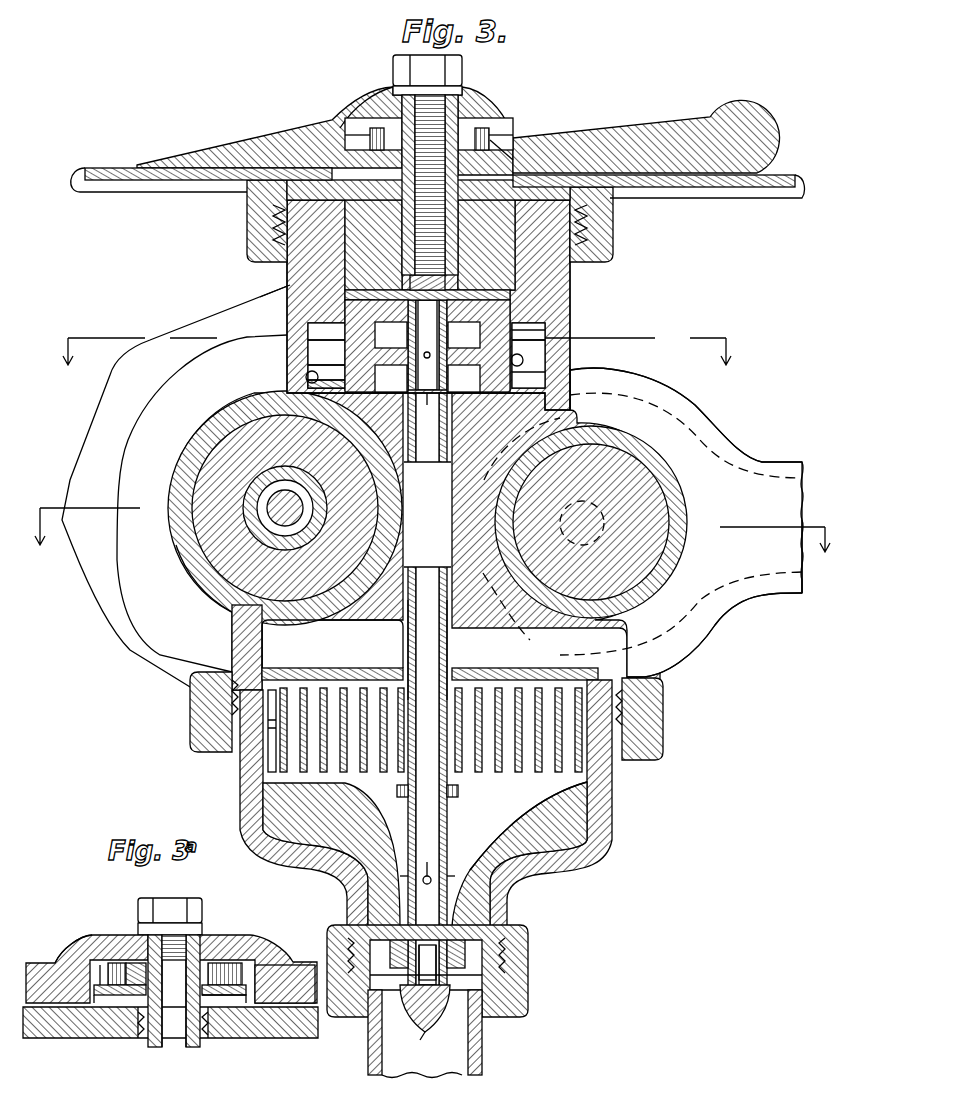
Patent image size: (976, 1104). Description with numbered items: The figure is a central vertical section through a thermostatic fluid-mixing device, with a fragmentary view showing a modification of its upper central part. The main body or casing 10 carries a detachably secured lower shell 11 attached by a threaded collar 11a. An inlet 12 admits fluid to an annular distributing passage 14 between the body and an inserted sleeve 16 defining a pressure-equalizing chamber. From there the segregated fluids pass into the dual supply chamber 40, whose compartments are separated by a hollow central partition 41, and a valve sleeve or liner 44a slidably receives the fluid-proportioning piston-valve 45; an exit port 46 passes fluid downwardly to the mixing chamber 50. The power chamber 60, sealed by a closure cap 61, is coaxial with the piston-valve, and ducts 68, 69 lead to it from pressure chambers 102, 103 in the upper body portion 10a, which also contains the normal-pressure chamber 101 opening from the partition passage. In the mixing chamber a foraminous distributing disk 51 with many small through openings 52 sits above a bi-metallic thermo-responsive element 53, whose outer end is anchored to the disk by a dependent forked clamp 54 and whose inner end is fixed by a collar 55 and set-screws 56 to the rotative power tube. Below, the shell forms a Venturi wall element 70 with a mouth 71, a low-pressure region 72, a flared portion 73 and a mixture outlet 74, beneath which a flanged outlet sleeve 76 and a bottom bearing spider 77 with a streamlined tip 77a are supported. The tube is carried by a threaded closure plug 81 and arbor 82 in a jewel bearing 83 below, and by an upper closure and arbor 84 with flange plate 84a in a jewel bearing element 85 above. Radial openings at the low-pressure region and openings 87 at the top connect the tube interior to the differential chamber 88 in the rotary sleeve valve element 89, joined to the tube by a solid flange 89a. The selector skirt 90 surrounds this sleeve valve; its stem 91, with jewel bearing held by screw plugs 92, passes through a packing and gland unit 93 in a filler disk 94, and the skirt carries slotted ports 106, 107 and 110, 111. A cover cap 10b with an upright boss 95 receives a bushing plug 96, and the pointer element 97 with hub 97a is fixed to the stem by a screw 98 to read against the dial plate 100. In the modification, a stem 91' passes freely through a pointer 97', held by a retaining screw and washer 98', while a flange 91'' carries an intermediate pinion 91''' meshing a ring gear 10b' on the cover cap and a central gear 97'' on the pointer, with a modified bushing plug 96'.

In FIG. 3, the main body or casing 10 is at (195, 310).
In FIG. 3, the upper cylindrical body portion 10a is at (572, 288).
In FIG. 3, the cover cap 10b is at (448, 221).
In FIG. 3A, the cover cap 10b is at (170, 1035).
In FIG. 3, the lower shell 11 is at (612, 792).
In FIG. 3, the threaded collar 11a is at (665, 728).
In FIG. 3, the inlet 12 is at (780, 588).
In FIG. 3, the annular distributing passage 14 is at (722, 452).
In FIG. 3, the inserted sleeve (pressure-equalizing chamber) 16 is at (688, 495).
In FIG. 3, the dual supply chamber 40 is at (172, 531).
In FIG. 3, the hollow central partition 41 is at (486, 529).
In FIG. 3, the valve sleeve or liner 44a is at (218, 598).
In FIG. 3, the fluid-proportioning piston-valve 45 is at (250, 488).
In FIG. 3, the exit port 46 is at (282, 626).
In FIG. 3, the mixing chamber 50 is at (232, 630).
In FIG. 3, the foraminous distributing disk 51 is at (486, 664).
In FIG. 3, the through openings 52 is at (340, 662).
In FIG. 3, the bi-metallic thermo-responsive element 53 is at (365, 772).
In FIG. 3, the left clamping nut 54 is at (268, 728).
In FIG. 3, the collar 55 is at (458, 775).
In FIG. 3, the set-screws 56 is at (397, 792).
In FIG. 3, the power or motor chamber 60 is at (128, 433).
In FIG. 3, the closure cap 61 is at (108, 403).
In FIG. 3, the duct 68 is at (312, 378).
In FIG. 3, the duct 69 is at (548, 355).
In FIG. 3, the double-conical wall element (Venturi tube) 70 is at (250, 808).
In FIG. 3, the Venturi mouth 71 is at (545, 795).
In FIG. 3, the low-pressure region 72 is at (478, 878).
In FIG. 3, the flared Venturi wall 73 is at (392, 884).
In FIG. 3, the mixture outlet 74 is at (392, 990).
In FIG. 3, the flanged outlet sleeve 76 is at (482, 1050).
In FIG. 3, the bottom bearing spider 77 is at (456, 990).
In FIG. 3, the streamlined tip 77a is at (420, 1040).
In FIG. 3, the threaded closure plug 81 is at (424, 940).
In FIG. 3, the arbor 82 is at (457, 953).
In FIG. 3, the jewel bearing 83 is at (397, 953).
In FIG. 3, the upper end closure and arbor 84 is at (425, 345).
In FIG. 3, the flange plate 84a is at (408, 283).
In FIG. 3, the jewel bearing element 85 is at (450, 296).
In FIG. 3, the radial openings 87 is at (376, 346).
In FIG. 3, the differential or negative-pressure chamber 88 is at (478, 346).
In FIG. 3, the rotary sleeve valve element 89 is at (464, 378).
In FIG. 3, the solid flange 89a is at (391, 378).
In FIG. 3, the selector skirt 90 is at (352, 353).
In FIG. 3, the selector stem 91 is at (485, 134).
In FIG. 3, the screw plugs 92 is at (375, 253).
In FIG. 3, the packing and gland unit 93 is at (373, 134).
In FIG. 3, the filler disk 94 is at (345, 275).
In FIG. 3, the central upright boss 95 is at (345, 120).
In FIG. 3, the bushing plug 96 is at (530, 133).
In FIG. 3, the hand lever and pointer element 97 is at (269, 127).
In FIG. 3, the hub 97a is at (505, 104).
In FIG. 3, the screw 98 is at (442, 162).
In FIG. 3, the dial plate 100 is at (170, 182).
In FIG. 3, the normal-pressure chamber 101 is at (424, 400).
In FIG. 3, the pressure chamber 102 is at (310, 328).
In FIG. 3, the pressure chamber 103 is at (572, 322).
In FIG. 3, the slot-formed port 106 is at (312, 342).
In FIG. 3, the slot-formed port 107 is at (572, 340).
In FIG. 3, the slotted port 110 is at (310, 364).
In FIG. 3, the slotted port 111 is at (572, 372).
In FIG. 3A, the retaining screw and washer 98' is at (173, 899).
In FIG. 3A, the stem 91' is at (161, 1004).
In FIG. 3A, the flange 91'' is at (258, 974).
In FIG. 3A, the intermediate pinion 91''' is at (72, 940).
In FIG. 3A, the bushing plug 96' is at (171, 1016).
In FIG. 3A, the pointer 97' is at (257, 961).
In FIG. 3A, the central gear 97'' is at (143, 955).
In FIG. 3A, the ring gear 10b' is at (285, 966).